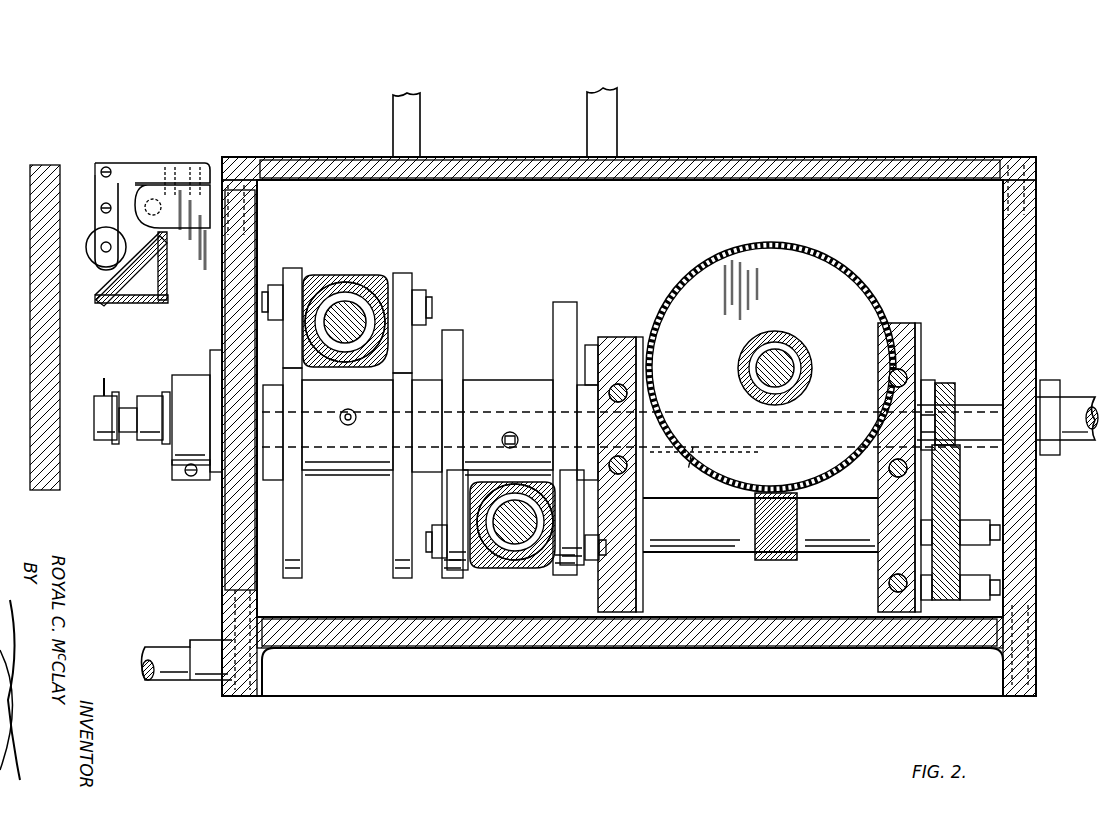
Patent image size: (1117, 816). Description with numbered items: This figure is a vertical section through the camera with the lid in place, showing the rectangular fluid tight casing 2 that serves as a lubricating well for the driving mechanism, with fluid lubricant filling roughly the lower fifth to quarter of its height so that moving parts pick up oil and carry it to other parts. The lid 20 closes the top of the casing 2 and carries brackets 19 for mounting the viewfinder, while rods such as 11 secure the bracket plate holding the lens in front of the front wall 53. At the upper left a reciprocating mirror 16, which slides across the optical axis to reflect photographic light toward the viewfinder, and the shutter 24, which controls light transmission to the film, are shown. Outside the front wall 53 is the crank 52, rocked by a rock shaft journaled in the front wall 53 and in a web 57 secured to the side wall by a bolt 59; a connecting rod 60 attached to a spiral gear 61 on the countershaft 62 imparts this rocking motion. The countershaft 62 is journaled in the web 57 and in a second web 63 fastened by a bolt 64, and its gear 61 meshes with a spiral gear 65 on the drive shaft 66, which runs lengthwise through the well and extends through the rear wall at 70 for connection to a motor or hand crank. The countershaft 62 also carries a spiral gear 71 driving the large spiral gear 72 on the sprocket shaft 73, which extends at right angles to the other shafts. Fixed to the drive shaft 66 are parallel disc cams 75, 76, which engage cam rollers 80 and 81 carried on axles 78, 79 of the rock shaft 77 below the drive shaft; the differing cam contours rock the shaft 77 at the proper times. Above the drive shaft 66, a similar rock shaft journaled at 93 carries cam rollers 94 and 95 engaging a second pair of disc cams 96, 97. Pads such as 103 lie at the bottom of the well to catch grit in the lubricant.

The fluid tight casing 2 is at (995, 198).
The rod 11 is at (170, 655).
The reciprocating mirror 16 is at (105, 292).
The bracket 19 is at (410, 118).
The lid 20 is at (298, 165).
The shutter 24 is at (182, 290).
The crank 52 is at (212, 422).
The front wall 53 is at (248, 246).
The web 57 is at (912, 332).
The bolt 59 is at (918, 358).
The connecting rod 60 is at (995, 585).
The spiral gear 61 is at (950, 498).
The countershaft 62 is at (720, 552).
The web 63 is at (638, 337).
The bolt 64 is at (618, 385).
The spiral gear 65 is at (945, 383).
The drive shaft 66 is at (688, 470).
The drive shaft extension 70 is at (1075, 440).
The spiral gear 71 is at (785, 560).
The spiral gear 72 is at (752, 252).
The sprocket shaft 73 is at (775, 355).
The disc cam 75 is at (568, 302).
The disc cam 76 is at (452, 328).
The rock shaft 77 is at (520, 548).
The axle 78 is at (438, 558).
The axle 79 is at (598, 548).
The cam roller 80 is at (462, 570).
The cam roller 81 is at (575, 565).
The journal 93 is at (352, 300).
The cam roller 94 is at (292, 270).
The cam roller 95 is at (405, 273).
The disc cam 96 is at (298, 533).
The disc cam 97 is at (400, 540).
The pad 103 is at (318, 617).